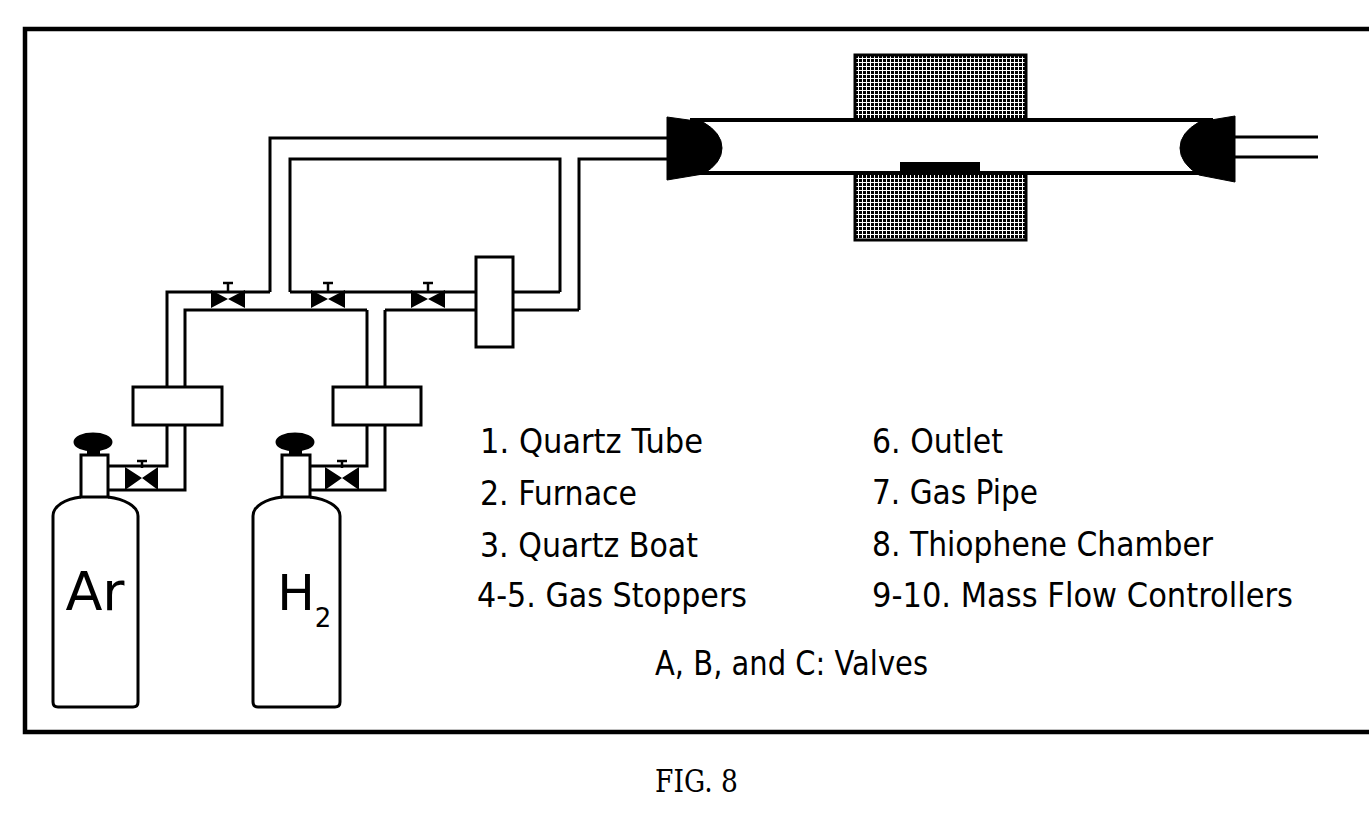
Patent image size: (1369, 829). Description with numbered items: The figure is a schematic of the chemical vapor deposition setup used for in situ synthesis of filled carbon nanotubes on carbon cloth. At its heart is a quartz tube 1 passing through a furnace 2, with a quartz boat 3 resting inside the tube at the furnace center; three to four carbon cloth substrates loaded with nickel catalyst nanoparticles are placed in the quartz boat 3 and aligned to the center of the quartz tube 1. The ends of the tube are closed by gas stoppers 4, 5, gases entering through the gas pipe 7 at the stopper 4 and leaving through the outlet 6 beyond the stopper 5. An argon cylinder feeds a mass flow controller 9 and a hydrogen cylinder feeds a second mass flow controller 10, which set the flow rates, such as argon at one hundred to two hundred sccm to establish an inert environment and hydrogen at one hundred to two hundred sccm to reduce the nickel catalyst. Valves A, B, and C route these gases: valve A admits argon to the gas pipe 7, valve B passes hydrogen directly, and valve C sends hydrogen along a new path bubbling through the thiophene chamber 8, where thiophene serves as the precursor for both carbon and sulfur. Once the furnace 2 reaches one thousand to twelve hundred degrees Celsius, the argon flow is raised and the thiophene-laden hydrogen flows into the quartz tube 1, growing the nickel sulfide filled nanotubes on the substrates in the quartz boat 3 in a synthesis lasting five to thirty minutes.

The quartz tube 1 is at (951, 148).
The furnace 2 is at (940, 173).
The quartz boat 3 is at (940, 146).
The gas stopper 4 is at (694, 127).
The gas stopper 5 is at (1207, 129).
The outlet 6 is at (1292, 149).
The gas pipe 7 is at (468, 201).
The thiophene chamber 8 is at (527, 302).
The mass flow controller 9 is at (177, 405).
The mass flow controller 10 is at (377, 405).
The valve A is at (228, 273).
The valve B is at (328, 273).
The valve C is at (428, 273).